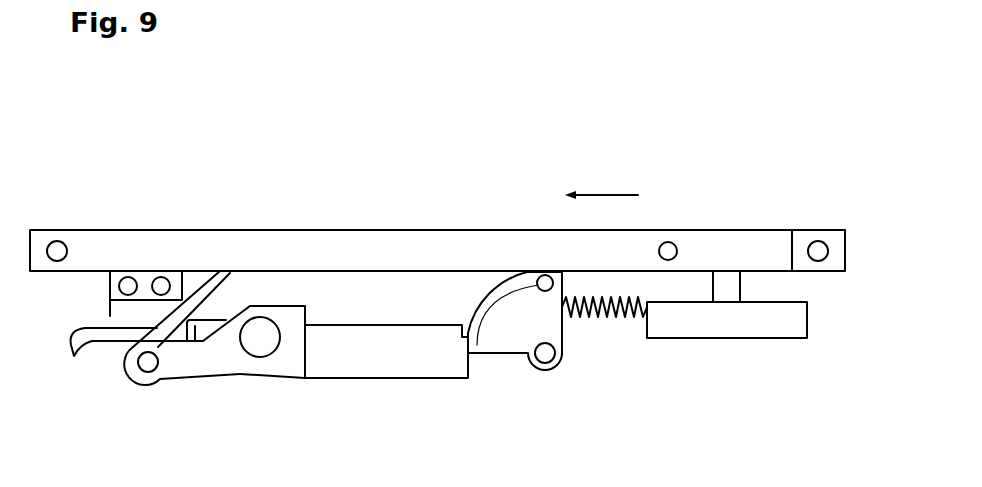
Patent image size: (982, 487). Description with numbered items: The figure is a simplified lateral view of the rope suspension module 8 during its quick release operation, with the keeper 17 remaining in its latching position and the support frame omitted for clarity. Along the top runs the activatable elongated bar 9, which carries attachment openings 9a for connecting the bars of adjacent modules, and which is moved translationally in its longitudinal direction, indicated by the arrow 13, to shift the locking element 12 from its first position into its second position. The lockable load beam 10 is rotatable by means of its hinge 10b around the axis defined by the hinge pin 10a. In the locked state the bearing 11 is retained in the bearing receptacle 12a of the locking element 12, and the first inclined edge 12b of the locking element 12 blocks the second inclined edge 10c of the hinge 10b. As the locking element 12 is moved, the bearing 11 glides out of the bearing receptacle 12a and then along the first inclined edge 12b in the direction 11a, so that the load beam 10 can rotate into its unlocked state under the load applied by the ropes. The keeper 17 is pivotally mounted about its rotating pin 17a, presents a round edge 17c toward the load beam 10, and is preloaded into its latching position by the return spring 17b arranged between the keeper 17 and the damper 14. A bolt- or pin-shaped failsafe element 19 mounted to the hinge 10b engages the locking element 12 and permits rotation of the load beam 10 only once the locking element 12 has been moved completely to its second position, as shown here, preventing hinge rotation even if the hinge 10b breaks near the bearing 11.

The rope suspension module 8 is at (99, 167).
The activatable elongated bar 9 is at (737, 242).
The attachment openings 9a is at (820, 244).
The lockable load beam 10 is at (442, 363).
The hinge pin 10a is at (263, 342).
The hinge 10b is at (236, 358).
The second inclined edge 10c is at (224, 305).
The bearing 11 is at (142, 381).
The direction 11a is at (190, 305).
The locking element 12 is at (108, 316).
The bearing receptacle 12a is at (90, 352).
The first inclined edge 12b is at (228, 280).
The arrow 13 is at (612, 195).
The damper 14 is at (773, 330).
The keeper 17 is at (555, 327).
The rotating pin 17a is at (546, 353).
The return spring 17b is at (628, 313).
The round edge 17c is at (496, 292).
The failsafe element 19 is at (197, 330).